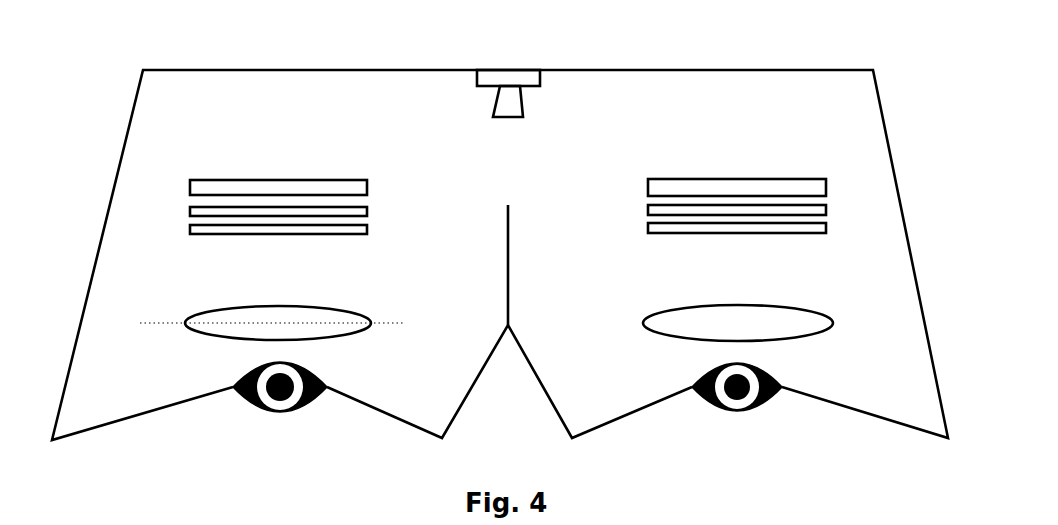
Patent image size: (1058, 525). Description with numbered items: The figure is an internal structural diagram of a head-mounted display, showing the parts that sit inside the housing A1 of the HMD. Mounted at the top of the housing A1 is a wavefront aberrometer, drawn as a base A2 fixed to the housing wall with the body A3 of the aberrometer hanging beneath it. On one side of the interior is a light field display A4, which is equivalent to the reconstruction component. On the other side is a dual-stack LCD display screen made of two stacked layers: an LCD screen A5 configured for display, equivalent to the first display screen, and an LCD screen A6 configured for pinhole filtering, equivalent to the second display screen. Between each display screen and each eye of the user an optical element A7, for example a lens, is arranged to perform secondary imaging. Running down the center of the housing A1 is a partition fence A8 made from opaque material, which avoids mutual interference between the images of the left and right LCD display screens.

The housing A1 is at (707, 68).
The base of the wavefront aberrometer A2 is at (523, 77).
The body of the wavefront aberrometer A3 is at (490, 105).
The light field display A4 is at (277, 177).
The LCD screen configured for display A5 is at (730, 223).
The LCD screen configured for pinhole filtering A6 is at (817, 233).
The optical element A7 is at (375, 323).
The partition fence A8 is at (510, 278).